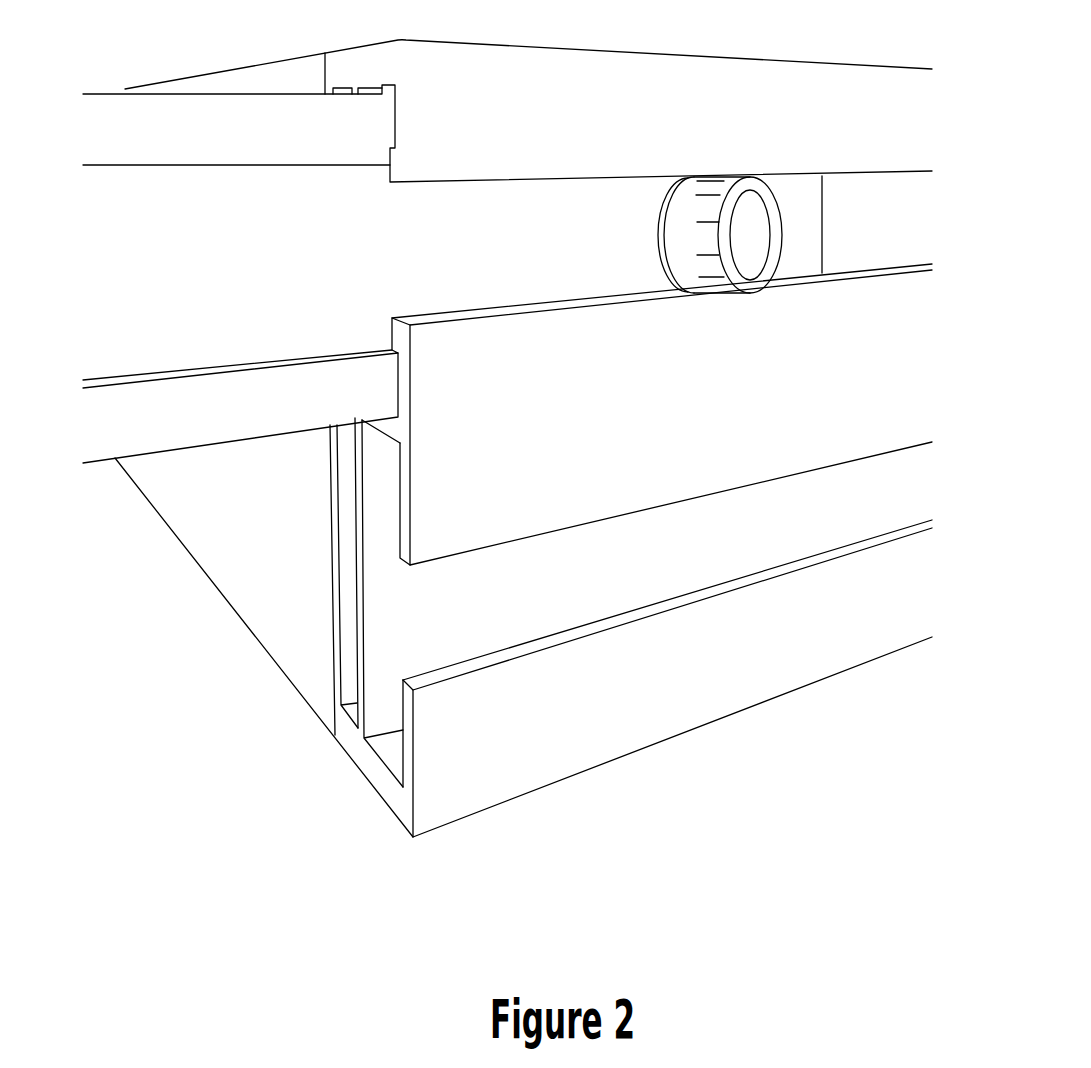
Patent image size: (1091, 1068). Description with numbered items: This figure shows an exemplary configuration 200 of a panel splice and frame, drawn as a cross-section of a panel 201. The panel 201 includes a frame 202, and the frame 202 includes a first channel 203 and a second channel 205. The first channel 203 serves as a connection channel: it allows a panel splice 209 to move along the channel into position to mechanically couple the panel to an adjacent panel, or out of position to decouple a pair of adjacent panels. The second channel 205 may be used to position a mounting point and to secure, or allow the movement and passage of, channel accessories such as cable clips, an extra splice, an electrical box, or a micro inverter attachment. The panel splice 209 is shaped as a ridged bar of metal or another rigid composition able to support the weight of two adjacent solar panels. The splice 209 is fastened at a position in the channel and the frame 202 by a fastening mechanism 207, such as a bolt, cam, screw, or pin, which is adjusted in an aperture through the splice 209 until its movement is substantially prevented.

The configuration 200 is at (491, 476).
The panel 201 is at (282, 563).
The frame 202 is at (646, 416).
The first channel 203 is at (373, 89).
The second channel 205 is at (413, 629).
The fastening mechanism 207 is at (745, 214).
The panel splice 209 is at (101, 82).